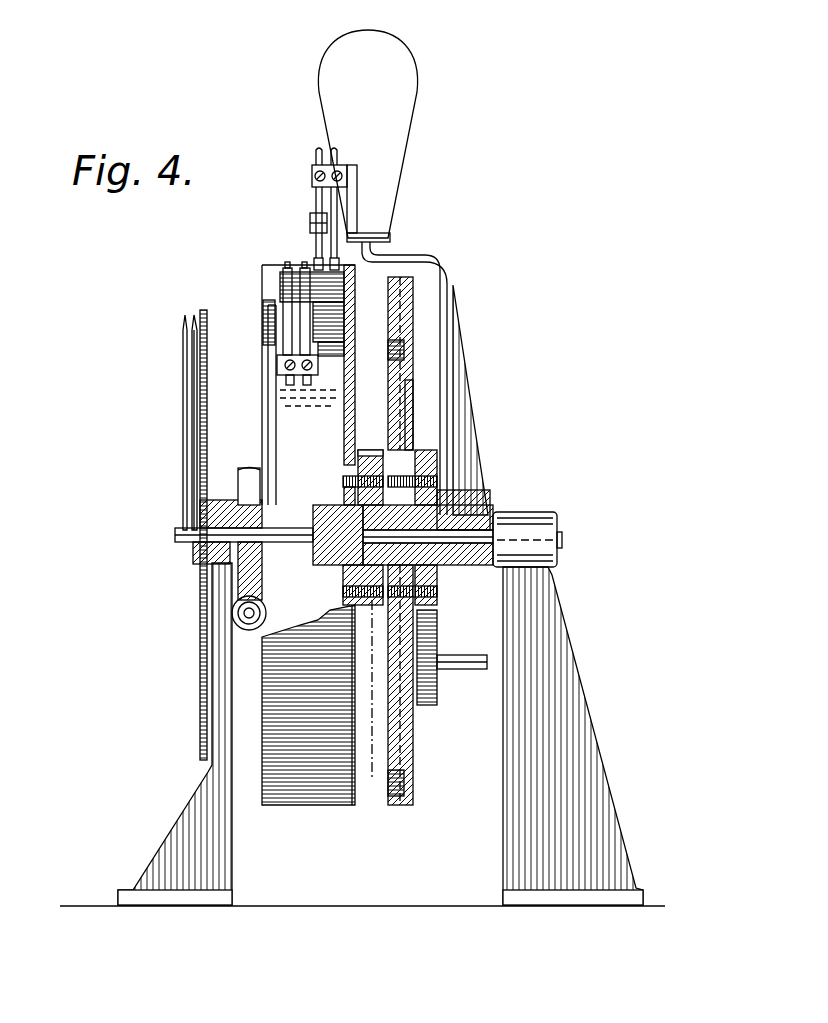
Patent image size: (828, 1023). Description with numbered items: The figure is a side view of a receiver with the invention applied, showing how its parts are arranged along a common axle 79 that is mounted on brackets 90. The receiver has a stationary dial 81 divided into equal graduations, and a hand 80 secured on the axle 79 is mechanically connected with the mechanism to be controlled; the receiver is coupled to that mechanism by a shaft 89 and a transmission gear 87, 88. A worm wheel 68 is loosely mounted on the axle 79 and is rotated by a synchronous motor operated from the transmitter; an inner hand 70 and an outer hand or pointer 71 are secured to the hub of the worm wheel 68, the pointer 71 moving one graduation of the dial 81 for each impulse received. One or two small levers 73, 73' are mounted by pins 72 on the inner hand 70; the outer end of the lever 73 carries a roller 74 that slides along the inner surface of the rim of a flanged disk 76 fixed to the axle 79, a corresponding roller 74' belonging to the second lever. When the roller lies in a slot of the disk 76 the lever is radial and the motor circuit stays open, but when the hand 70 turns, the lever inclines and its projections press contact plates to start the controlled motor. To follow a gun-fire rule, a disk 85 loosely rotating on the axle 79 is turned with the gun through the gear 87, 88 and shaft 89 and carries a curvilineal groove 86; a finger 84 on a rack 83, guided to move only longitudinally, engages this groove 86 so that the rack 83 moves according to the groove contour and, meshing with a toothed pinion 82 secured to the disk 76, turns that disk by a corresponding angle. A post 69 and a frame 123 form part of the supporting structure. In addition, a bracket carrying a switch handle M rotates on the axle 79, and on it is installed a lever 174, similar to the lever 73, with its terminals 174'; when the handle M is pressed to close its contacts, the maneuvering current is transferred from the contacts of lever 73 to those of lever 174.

The switch handle M is at (367, 136).
The worm wheel 68 is at (262, 578).
The needle bar post 69 is at (218, 518).
The inner hand 70 is at (277, 484).
The hand or pointer 71 is at (183, 393).
The pins 72 is at (346, 332).
The small lever 73 is at (291, 308).
The small lever 73' is at (349, 324).
The roller 74 is at (274, 299).
The plunger 74' is at (299, 299).
The flanged disk 76 is at (413, 330).
The axle 79 is at (300, 530).
The hand 80 is at (188, 476).
The dial 81 is at (208, 336).
The toothed pinion 82 is at (368, 455).
The rack 83 is at (340, 656).
The finger or projection 84 is at (413, 743).
The disk 85 is at (413, 390).
The curvilineal groove 86 is at (388, 353).
The transmission gear 87 is at (440, 500).
The transmission gear 88 is at (428, 705).
The shaft 89 is at (470, 655).
The brackets 90 is at (380, 734).
The frame 123 is at (472, 400).
The lever 174 is at (300, 213).
The wire terminal 174' is at (351, 267).